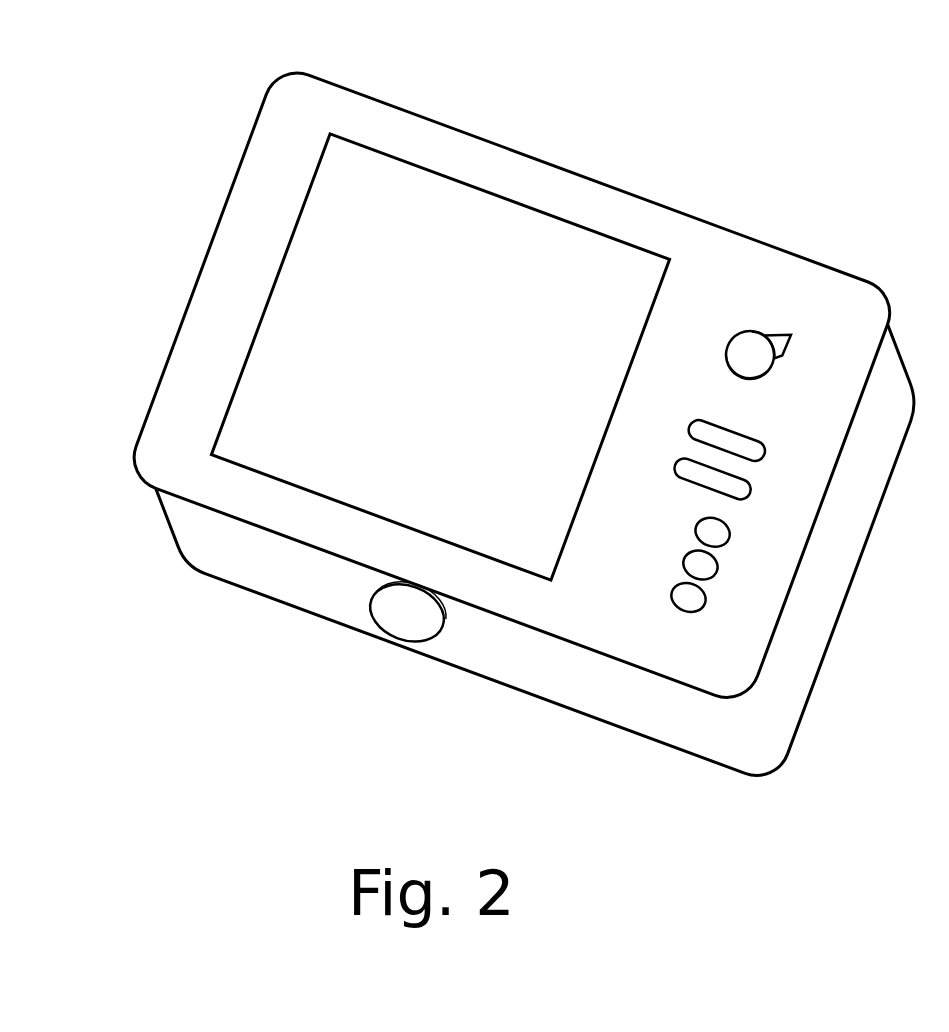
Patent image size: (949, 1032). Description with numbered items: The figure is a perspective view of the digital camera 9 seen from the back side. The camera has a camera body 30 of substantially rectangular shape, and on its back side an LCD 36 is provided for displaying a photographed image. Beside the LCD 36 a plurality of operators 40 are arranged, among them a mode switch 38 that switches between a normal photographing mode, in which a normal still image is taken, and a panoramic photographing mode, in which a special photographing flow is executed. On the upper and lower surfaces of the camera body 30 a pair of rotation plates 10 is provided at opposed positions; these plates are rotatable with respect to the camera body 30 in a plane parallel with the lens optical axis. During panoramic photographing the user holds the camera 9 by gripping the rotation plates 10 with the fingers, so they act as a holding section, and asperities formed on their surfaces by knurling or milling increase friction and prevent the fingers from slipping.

The digital camera 9 is at (709, 176).
The rotation plate 10 is at (400, 622).
The camera body 30 is at (430, 148).
The LCD 36 is at (302, 465).
The mode switch 38 is at (748, 345).
The operators 40 is at (723, 536).